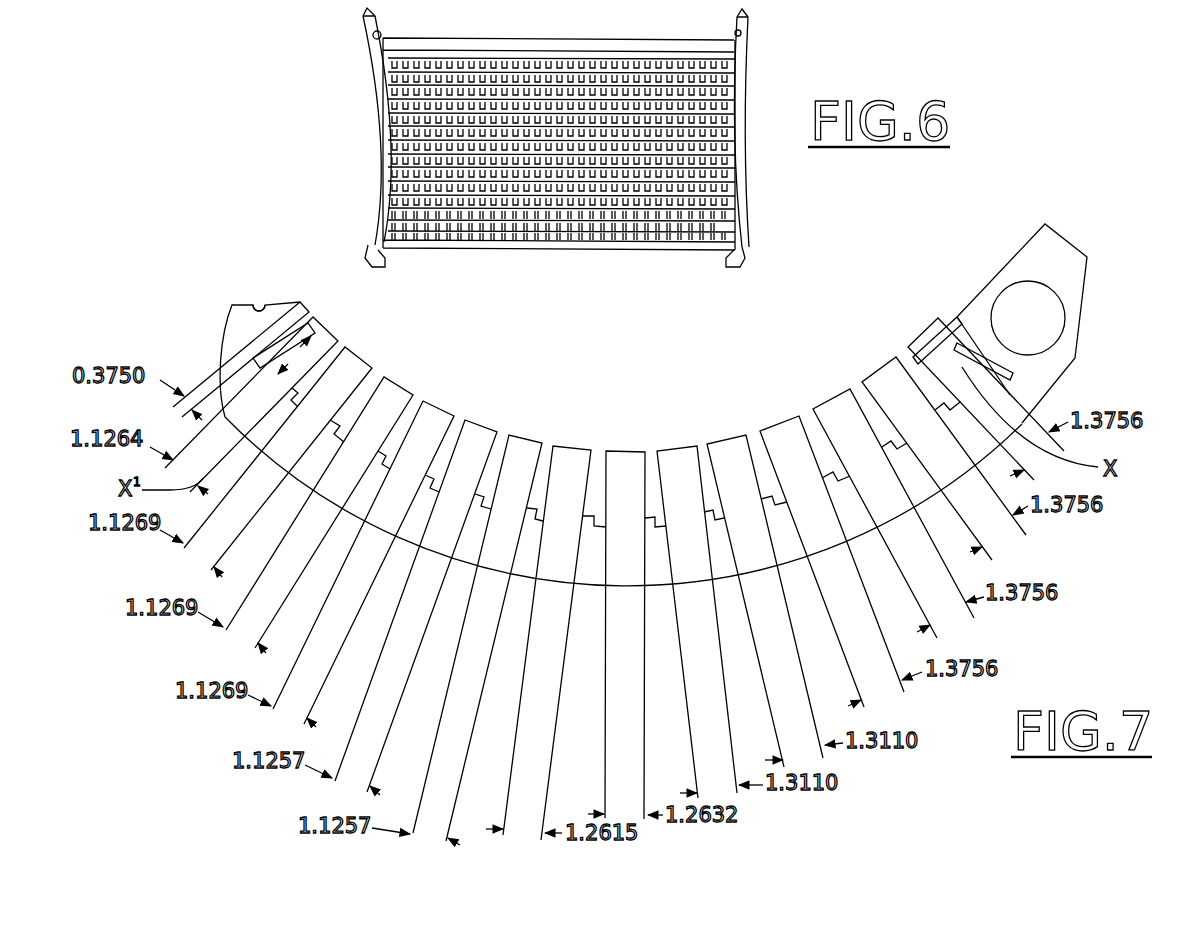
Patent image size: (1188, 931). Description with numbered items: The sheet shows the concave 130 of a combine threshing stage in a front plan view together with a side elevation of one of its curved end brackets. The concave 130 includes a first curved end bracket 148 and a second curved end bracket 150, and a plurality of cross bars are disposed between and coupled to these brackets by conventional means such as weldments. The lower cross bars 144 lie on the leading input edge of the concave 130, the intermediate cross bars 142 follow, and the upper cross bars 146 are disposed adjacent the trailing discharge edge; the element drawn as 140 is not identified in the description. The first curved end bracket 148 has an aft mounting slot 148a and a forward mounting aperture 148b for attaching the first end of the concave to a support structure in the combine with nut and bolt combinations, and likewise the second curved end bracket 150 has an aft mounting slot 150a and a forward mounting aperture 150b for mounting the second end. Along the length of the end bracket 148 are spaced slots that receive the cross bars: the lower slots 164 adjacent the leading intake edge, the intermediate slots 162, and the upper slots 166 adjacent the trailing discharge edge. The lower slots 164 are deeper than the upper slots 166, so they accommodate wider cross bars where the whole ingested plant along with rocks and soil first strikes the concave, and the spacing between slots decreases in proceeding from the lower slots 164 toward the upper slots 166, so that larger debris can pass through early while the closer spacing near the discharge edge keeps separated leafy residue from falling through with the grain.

In FIG. 6, the concave 130 is at (350, 190).
In FIG. 6, the lamination stack 140 is at (697, 158).
In FIG. 6, the intermediate cross bars 142 is at (396, 148).
In FIG. 6, the lower cross bars 144 is at (577, 238).
In FIG. 6, the upper cross bars 146 is at (396, 78).
In FIG. 6, the first curved end bracket 148 is at (748, 62).
In FIG. 7, the first curved end bracket 148 is at (220, 329).
In FIG. 6, the aft mounting slot 148a is at (749, 258).
In FIG. 7, the aft mounting slot 148a is at (260, 298).
In FIG. 6, the forward mounting aperture 148b is at (746, 28).
In FIG. 7, the forward mounting aperture 148b is at (1053, 292).
In FIG. 6, the second curved end bracket 150 is at (382, 107).
In FIG. 6, the aft mounting slot 150a is at (378, 262).
In FIG. 6, the forward mounting aperture 150b is at (378, 36).
In FIG. 7, the intermediate slots 162 is at (605, 478).
In FIG. 7, the lower slots 164 is at (988, 389).
In FIG. 7, the upper slots 166 is at (345, 350).